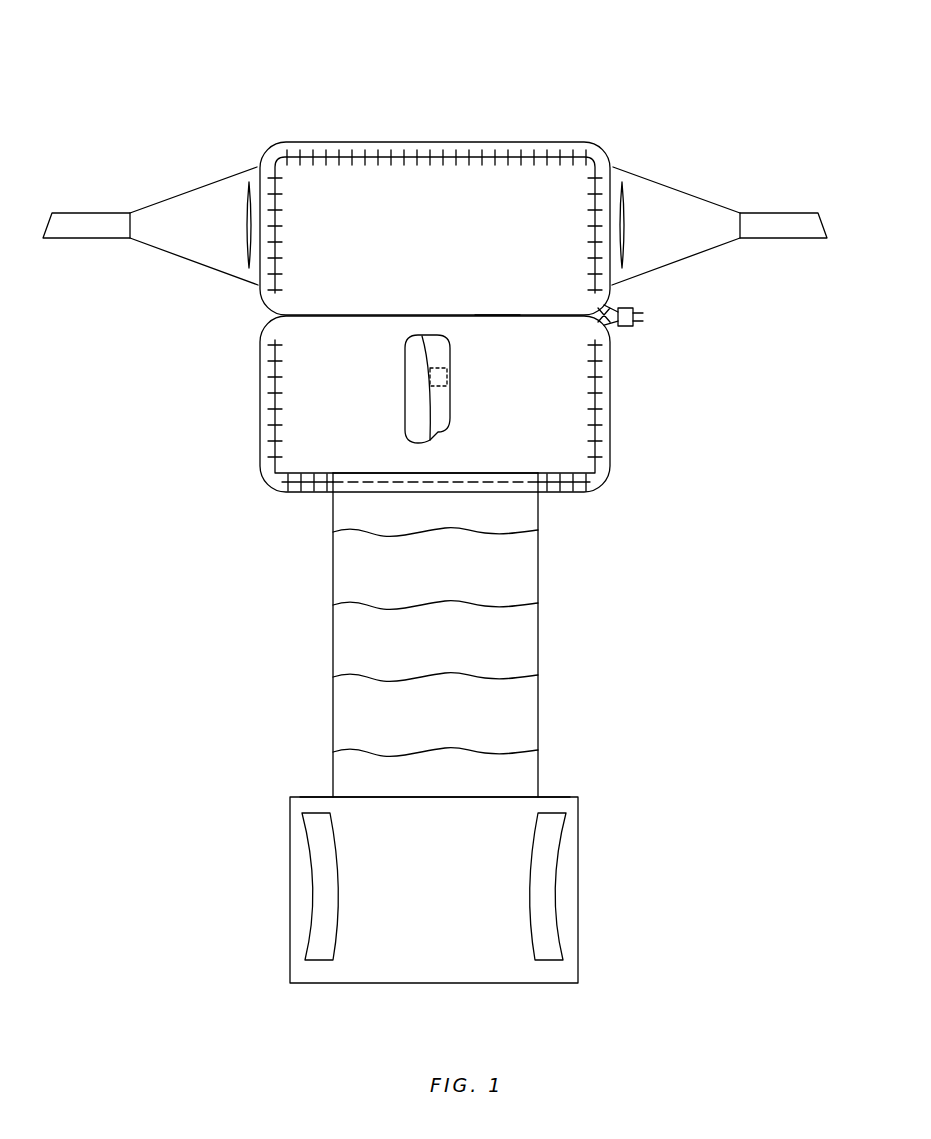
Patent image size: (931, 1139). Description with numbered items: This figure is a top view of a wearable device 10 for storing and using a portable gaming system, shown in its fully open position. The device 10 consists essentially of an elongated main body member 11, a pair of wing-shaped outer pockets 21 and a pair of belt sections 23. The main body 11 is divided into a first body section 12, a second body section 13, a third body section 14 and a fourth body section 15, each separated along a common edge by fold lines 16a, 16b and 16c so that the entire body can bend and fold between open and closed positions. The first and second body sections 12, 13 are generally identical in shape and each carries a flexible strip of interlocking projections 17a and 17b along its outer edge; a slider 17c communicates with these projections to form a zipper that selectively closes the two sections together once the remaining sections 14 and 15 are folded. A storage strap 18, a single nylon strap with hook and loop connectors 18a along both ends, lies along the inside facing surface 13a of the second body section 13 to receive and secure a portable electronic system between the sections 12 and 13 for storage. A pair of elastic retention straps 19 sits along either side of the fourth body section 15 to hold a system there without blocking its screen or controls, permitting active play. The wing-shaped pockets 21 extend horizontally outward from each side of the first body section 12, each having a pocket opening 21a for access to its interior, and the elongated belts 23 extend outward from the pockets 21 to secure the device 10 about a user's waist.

The device 10 is at (226, 74).
The main body member 11 is at (433, 131).
The first body section 12 is at (452, 238).
The second body section 13 is at (258, 405).
The inside facing surface 13a is at (520, 433).
The third body section 14 is at (436, 650).
The fourth body section 15 is at (450, 923).
The fold line 16a is at (495, 318).
The fold line 16b is at (350, 472).
The fold line 16c is at (433, 800).
The flexible strip of interlocking projections 17a is at (600, 148).
The flexible strip of interlocking projections 17b is at (610, 388).
The slider 17c is at (645, 318).
The storage strap 18 is at (410, 362).
The hook and loop connectors 18a is at (430, 378).
The retention straps 19 is at (322, 893).
The wing-shaped outer pockets 21 is at (208, 226).
The pocket opening 21a is at (243, 195).
The belts 23 is at (100, 215).